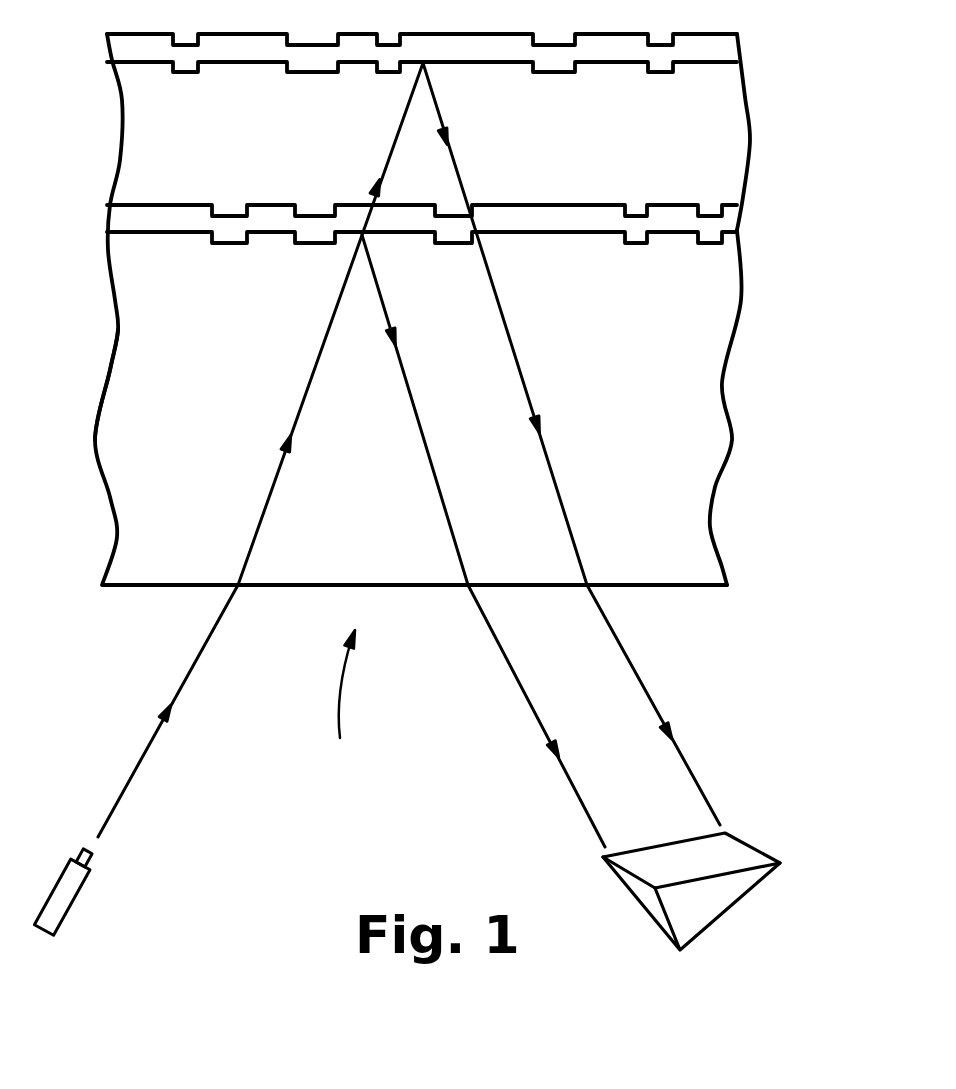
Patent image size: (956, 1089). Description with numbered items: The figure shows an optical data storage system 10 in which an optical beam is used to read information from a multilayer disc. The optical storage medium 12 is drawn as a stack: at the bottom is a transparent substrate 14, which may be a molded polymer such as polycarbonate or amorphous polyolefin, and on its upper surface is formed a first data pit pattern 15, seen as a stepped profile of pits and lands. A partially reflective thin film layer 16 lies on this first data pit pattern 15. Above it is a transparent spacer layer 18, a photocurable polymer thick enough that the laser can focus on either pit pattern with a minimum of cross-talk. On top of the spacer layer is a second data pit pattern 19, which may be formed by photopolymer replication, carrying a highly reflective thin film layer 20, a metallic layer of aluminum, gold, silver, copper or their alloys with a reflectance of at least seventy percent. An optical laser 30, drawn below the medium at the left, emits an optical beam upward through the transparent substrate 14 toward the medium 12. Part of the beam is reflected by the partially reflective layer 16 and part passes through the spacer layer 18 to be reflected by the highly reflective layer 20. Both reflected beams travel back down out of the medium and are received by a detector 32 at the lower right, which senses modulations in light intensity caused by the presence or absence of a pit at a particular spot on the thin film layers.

The optical data storage system 10 is at (341, 701).
The optical storage medium 12 is at (118, 368).
The transparent substrate 14 is at (688, 463).
The first data pit pattern 15 is at (157, 235).
The partially reflective thin film layer 16 is at (725, 228).
The transparent spacer layer 18 is at (712, 148).
The second data pit pattern 19 is at (147, 66).
The highly reflective thin film layer 20 is at (710, 48).
The optical laser 30 is at (63, 896).
The detector 32 is at (730, 856).